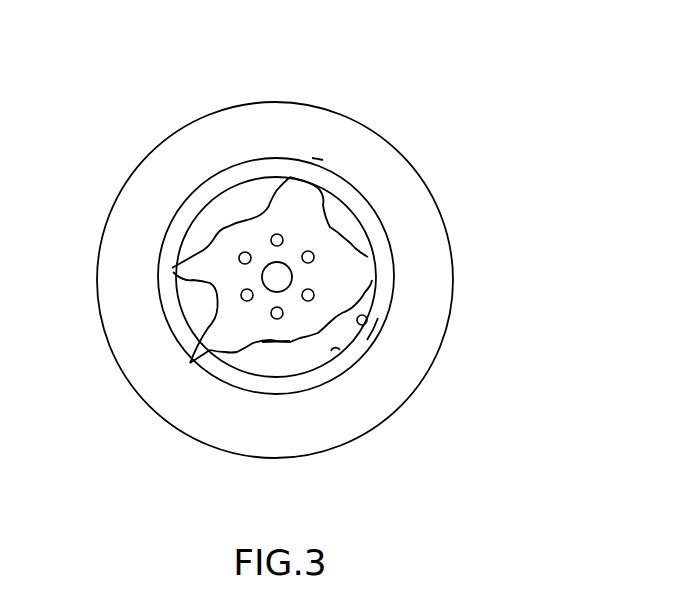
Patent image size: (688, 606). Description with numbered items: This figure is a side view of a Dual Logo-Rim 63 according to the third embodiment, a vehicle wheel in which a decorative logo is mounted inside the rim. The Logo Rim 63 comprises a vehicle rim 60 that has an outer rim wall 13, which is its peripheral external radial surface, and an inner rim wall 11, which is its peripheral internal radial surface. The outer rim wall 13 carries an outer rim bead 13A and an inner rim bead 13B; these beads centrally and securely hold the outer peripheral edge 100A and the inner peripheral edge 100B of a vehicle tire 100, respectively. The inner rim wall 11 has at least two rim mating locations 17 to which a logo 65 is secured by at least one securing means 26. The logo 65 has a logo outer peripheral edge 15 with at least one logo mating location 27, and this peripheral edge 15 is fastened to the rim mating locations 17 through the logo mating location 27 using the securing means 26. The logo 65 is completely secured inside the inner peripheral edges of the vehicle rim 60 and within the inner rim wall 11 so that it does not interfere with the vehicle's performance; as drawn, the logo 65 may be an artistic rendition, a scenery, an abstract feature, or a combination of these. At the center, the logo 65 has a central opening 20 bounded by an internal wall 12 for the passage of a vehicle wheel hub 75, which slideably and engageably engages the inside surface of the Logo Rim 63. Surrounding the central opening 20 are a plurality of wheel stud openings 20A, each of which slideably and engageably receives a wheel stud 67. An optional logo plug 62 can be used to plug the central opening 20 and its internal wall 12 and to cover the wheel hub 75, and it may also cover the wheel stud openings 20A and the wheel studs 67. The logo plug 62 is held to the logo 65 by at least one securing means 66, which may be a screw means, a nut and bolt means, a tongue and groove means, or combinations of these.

The Dual Logo-Rim 63 is at (153, 88).
The inner rim wall 11 is at (228, 188).
The wheel stud openings 20A is at (277, 234).
The outer rim wall 13 is at (300, 160).
The outer rim bead 13A is at (323, 160).
The outer peripheral edge 100A is at (350, 180).
The vehicle tire 100 is at (405, 181).
The internal wall 12 is at (302, 255).
The central opening 20 is at (280, 277).
The vehicle wheel hub 75 is at (314, 298).
The inner peripheral edge 100B is at (367, 322).
The vehicle rim 60 is at (367, 340).
The inner rim bead 13B is at (338, 345).
The logo plug 62 is at (287, 293).
The logo 65 is at (277, 336).
The securing means 66 is at (267, 290).
The rim mating locations 17 is at (190, 362).
The logo mating location 27 is at (173, 275).
The securing means 26 is at (173, 268).
The logo outer peripheral edge 15 is at (173, 265).
The wheel stud 67 is at (241, 253).